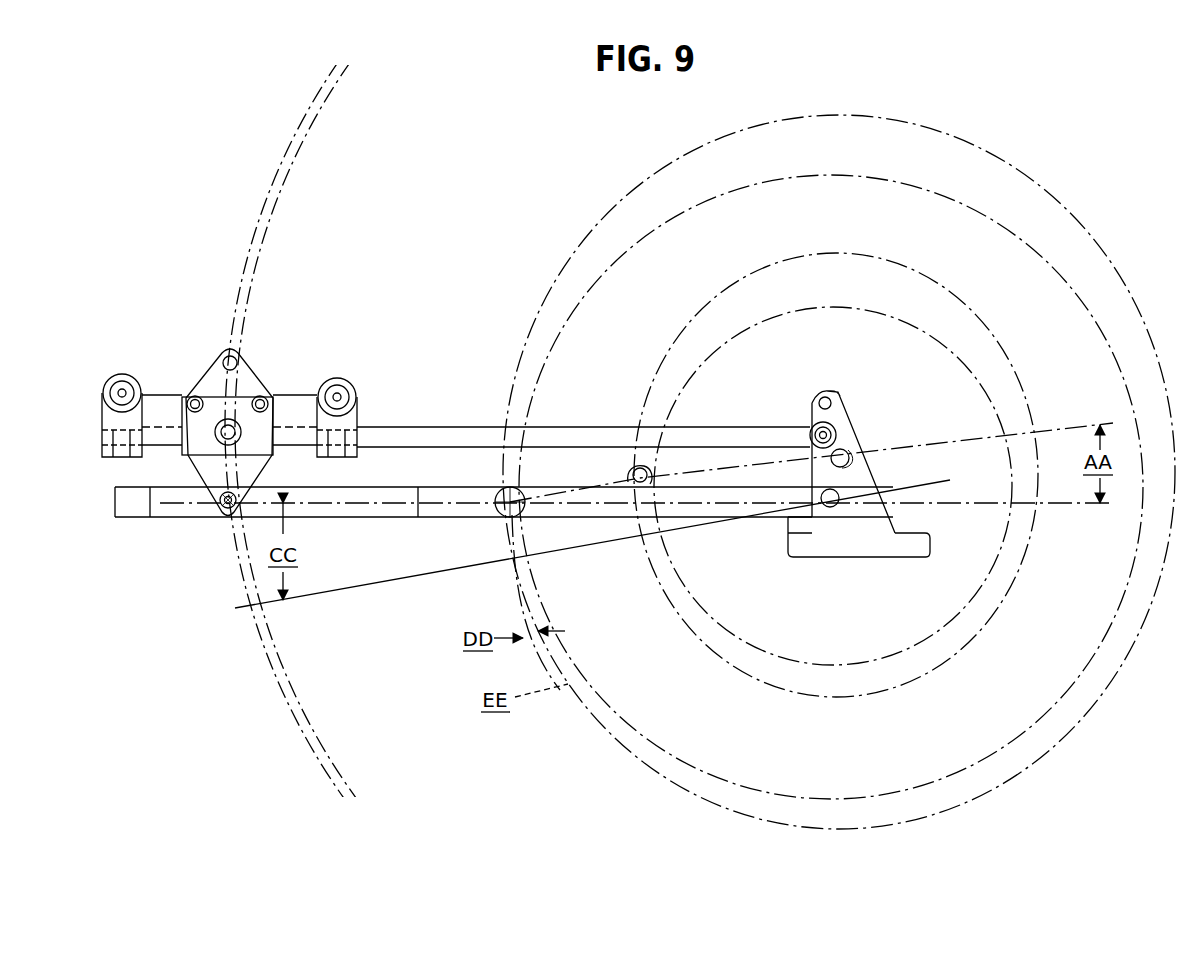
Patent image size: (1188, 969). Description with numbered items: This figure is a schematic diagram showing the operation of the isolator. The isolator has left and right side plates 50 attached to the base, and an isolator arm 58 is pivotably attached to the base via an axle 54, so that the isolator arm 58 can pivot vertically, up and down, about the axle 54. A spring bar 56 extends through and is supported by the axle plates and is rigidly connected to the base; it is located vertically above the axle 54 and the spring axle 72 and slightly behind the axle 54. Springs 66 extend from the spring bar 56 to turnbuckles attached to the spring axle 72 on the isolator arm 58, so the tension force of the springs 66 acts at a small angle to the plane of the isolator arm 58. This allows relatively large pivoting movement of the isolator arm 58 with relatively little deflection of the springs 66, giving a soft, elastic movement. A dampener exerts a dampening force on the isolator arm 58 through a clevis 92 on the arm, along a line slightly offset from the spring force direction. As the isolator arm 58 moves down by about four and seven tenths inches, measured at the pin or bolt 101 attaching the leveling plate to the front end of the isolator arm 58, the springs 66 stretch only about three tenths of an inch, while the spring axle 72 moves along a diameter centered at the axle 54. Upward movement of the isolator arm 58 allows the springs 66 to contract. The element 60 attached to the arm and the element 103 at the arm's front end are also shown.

The side plates 50 is at (845, 476).
The axle 54 is at (808, 538).
The spring bar 56 is at (848, 454).
The isolator arm 58 is at (565, 520).
The upper bar 60 is at (440, 427).
The springs 66 is at (558, 495).
The spring axle 72 is at (500, 510).
The clevis 92 is at (650, 470).
The pin or bolt 101 is at (222, 508).
The plate 103 is at (240, 370).